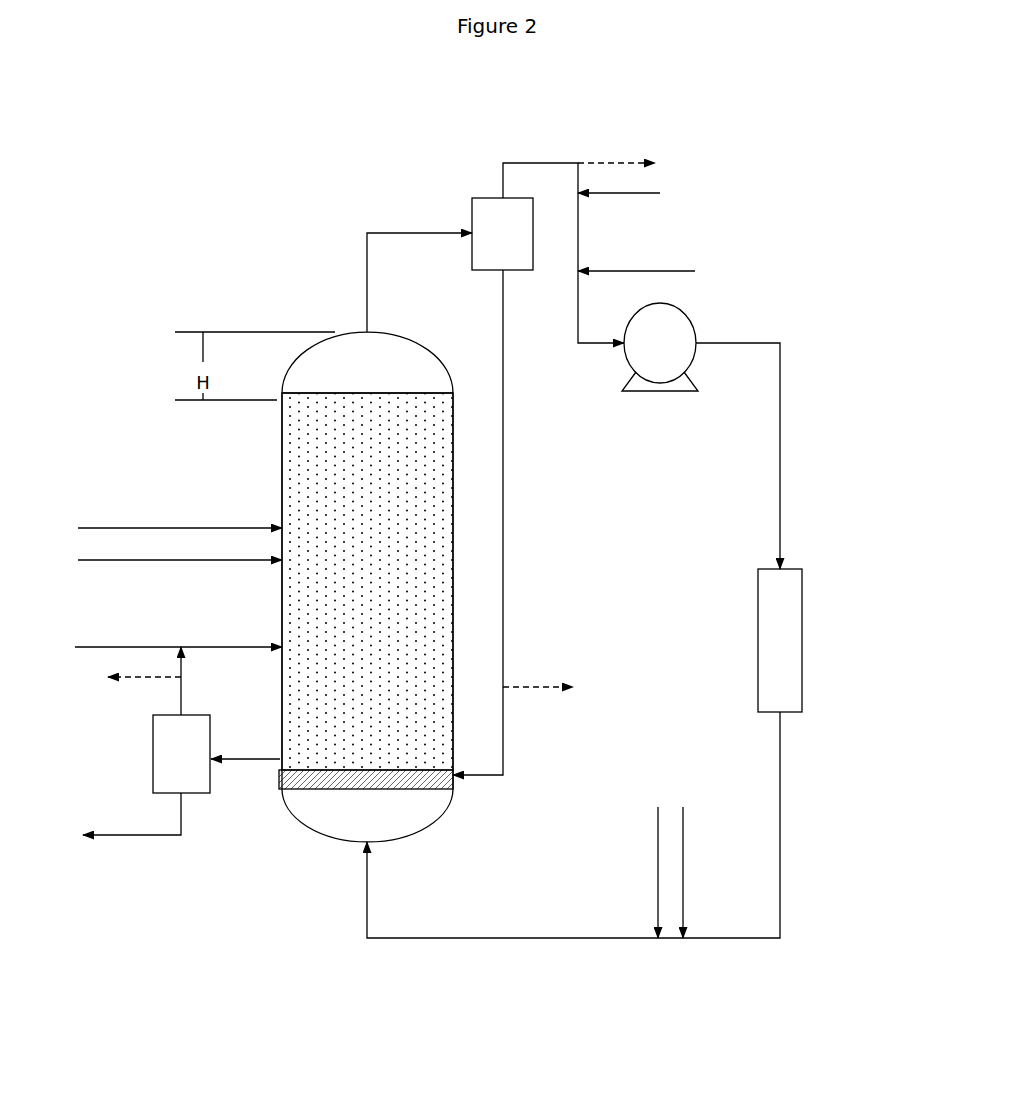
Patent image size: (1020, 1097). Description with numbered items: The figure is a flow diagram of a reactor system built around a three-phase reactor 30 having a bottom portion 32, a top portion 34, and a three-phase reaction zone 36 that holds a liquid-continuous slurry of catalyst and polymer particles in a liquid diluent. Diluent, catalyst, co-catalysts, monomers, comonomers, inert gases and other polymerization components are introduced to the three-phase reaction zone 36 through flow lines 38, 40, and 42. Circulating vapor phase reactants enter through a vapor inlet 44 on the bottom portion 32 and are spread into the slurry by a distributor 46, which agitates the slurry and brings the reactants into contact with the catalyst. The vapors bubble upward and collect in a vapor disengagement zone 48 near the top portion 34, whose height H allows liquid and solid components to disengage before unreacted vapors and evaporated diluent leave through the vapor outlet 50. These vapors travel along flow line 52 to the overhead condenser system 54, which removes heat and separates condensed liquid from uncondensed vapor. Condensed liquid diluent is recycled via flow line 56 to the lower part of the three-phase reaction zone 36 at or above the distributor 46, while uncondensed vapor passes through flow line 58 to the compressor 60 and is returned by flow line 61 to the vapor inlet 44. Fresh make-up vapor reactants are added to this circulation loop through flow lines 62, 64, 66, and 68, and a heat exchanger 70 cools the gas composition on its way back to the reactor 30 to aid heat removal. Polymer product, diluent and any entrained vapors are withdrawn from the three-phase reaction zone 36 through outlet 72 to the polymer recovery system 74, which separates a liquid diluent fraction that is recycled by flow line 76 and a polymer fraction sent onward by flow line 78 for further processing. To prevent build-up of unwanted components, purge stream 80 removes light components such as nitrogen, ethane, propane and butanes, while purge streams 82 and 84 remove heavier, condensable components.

The three-phase reactor 30 is at (278, 188).
The bottom portion 32 is at (300, 812).
The top portion 34 is at (425, 345).
The three-phase reaction zone 36 is at (367, 581).
The flow line 38 is at (208, 643).
The flow line 40 is at (197, 565).
The flow line 42 is at (173, 524).
The vapor inlet 44 is at (366, 843).
The distributor 46 is at (418, 789).
The vapor disengagement zone 48 is at (367, 373).
The vapor outlet 50 is at (372, 332).
The flow line 52 is at (366, 292).
The overhead condenser system 54 is at (502, 234).
The flow line 56 is at (505, 530).
The flow line 58 is at (578, 338).
The compressor 60 is at (630, 392).
The flow line 61 is at (793, 445).
The flow line 62 is at (633, 200).
The flow line 64 is at (650, 270).
The flow line 66 is at (655, 845).
The flow line 68 is at (683, 823).
The heat exchanger 70 is at (780, 640).
The outlet 72 is at (278, 768).
The polymer recovery system 74 is at (181, 754).
The flow line 76 is at (183, 700).
The flow line 78 is at (156, 838).
The purge stream 80 is at (600, 162).
The purge stream 82 is at (548, 690).
The purge stream 84 is at (138, 683).